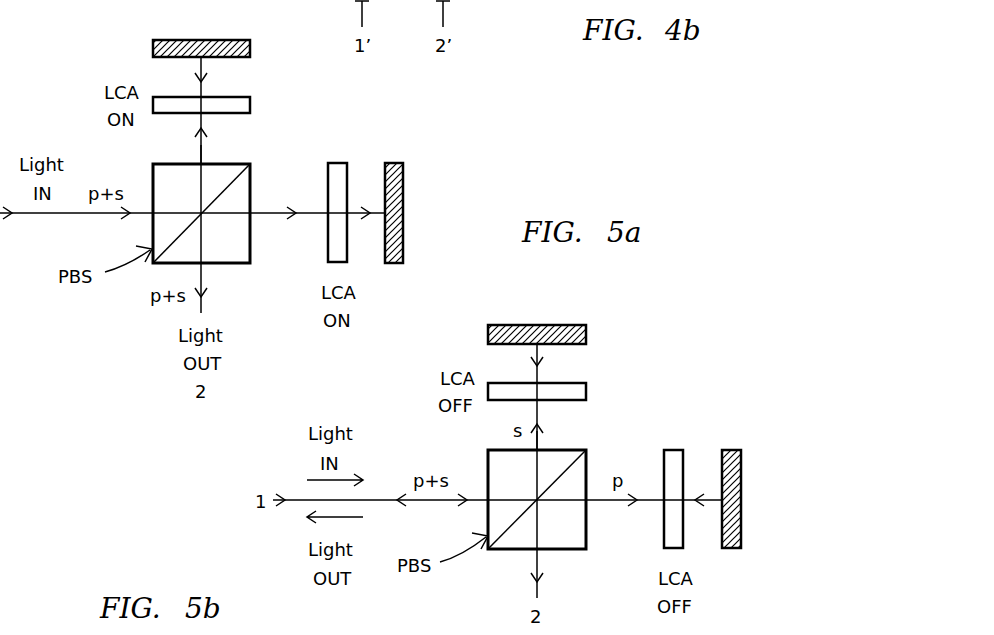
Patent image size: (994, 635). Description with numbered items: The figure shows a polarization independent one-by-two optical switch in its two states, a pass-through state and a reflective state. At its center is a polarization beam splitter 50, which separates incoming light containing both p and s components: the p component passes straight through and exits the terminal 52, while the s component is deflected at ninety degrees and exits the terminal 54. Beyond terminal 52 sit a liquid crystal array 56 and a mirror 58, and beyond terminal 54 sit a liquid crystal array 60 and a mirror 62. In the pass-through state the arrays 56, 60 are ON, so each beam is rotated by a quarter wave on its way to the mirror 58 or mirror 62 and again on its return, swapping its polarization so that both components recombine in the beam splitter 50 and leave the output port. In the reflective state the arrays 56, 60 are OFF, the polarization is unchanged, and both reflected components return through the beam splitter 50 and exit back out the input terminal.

In FIG. 5a, the polarization beam splitter 50 is at (235, 263).
In FIG. 5b, the polarization beam splitter 50 is at (556, 521).
In FIG. 5a, the terminal 52 is at (250, 203).
In FIG. 5b, the terminal 52 is at (569, 501).
In FIG. 5a, the terminal 54 is at (201, 164).
In FIG. 5b, the terminal 54 is at (574, 431).
In FIG. 5a, the liquid crystal array 56 is at (337, 163).
In FIG. 5b, the liquid crystal array 56 is at (705, 479).
In FIG. 5a, the mirror 58 is at (403, 193).
In FIG. 5b, the mirror 58 is at (762, 499).
In FIG. 5a, the liquid crystal array 60 is at (250, 105).
In FIG. 5b, the liquid crystal array 60 is at (567, 381).
In FIG. 5a, the mirror 62 is at (201, 40).
In FIG. 5b, the mirror 62 is at (548, 313).